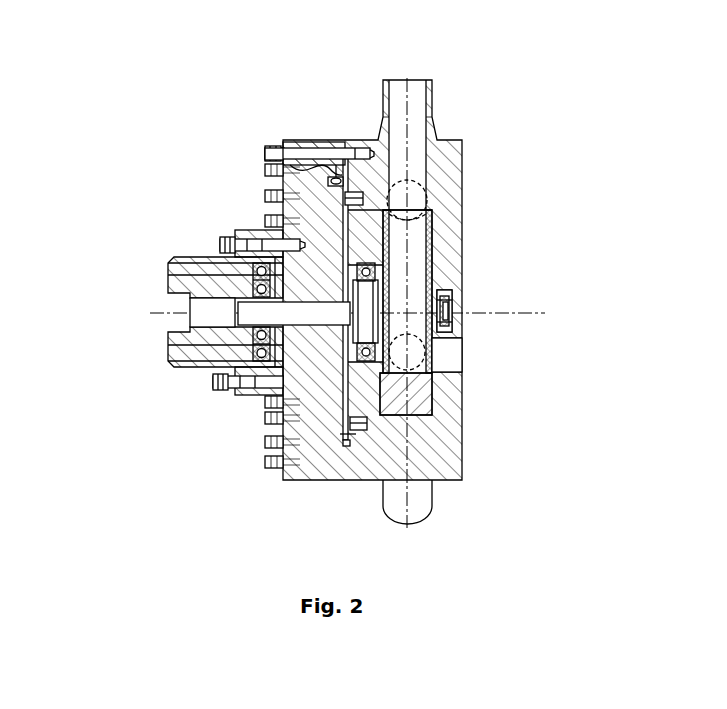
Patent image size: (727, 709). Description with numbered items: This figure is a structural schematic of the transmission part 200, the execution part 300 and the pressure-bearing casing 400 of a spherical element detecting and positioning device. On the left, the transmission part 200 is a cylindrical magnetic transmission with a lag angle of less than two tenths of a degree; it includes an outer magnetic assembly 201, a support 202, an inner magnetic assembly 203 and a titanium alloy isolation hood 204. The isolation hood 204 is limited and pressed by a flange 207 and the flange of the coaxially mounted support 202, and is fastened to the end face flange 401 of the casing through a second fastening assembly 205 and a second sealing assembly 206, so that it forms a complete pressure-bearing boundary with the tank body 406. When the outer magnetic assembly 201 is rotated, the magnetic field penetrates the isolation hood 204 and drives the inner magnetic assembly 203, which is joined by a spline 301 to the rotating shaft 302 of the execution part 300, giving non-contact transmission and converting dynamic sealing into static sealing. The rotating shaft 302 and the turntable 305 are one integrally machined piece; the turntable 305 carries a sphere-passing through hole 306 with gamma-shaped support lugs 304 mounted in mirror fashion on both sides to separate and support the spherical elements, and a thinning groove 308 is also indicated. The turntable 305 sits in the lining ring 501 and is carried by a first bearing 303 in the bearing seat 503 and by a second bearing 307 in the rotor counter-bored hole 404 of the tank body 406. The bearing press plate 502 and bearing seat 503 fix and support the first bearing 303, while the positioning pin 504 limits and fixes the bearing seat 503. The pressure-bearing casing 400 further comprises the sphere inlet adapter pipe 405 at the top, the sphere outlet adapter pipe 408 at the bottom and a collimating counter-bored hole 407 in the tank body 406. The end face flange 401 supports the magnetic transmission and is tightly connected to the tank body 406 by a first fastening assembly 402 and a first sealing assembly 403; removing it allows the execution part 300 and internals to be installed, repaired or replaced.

The transmission part 200 is at (148, 293).
The outer magnetic assembly 201 is at (172, 268).
The support 202 is at (198, 268).
The inner magnetic assembly 203 is at (216, 310).
The isolation hood 204 is at (268, 262).
The second fastening assembly 205 is at (228, 388).
The second sealing assembly 206 is at (270, 370).
The flange 207 is at (282, 367).
The execution part 300 is at (210, 315).
The spline 301 is at (252, 313).
The rotating shaft 302 is at (255, 265).
The first bearing 303 is at (443, 172).
The support lug 304 is at (386, 257).
The turntable 305 is at (372, 318).
The sphere-passing through hole 306 is at (420, 303).
The second bearing 307 is at (441, 296).
The thinning groove 308 is at (441, 345).
The pressure-bearing casing 400 is at (422, 72).
The end face flange 401 is at (298, 200).
The first fastening assembly 402 is at (297, 153).
The first sealing assembly 403 is at (336, 180).
The rotor counter-bored hole 404 is at (347, 195).
The sphere inlet adapter pipe 405 is at (385, 120).
The tank body 406 is at (452, 168).
The collimating counter-bored hole 407 is at (458, 360).
The sphere outlet adapter pipe 408 is at (392, 496).
The lining ring 501 is at (425, 408).
The bearing press plate 502 is at (348, 362).
The bearing seat 503 is at (362, 375).
The positioning pin 504 is at (356, 418).